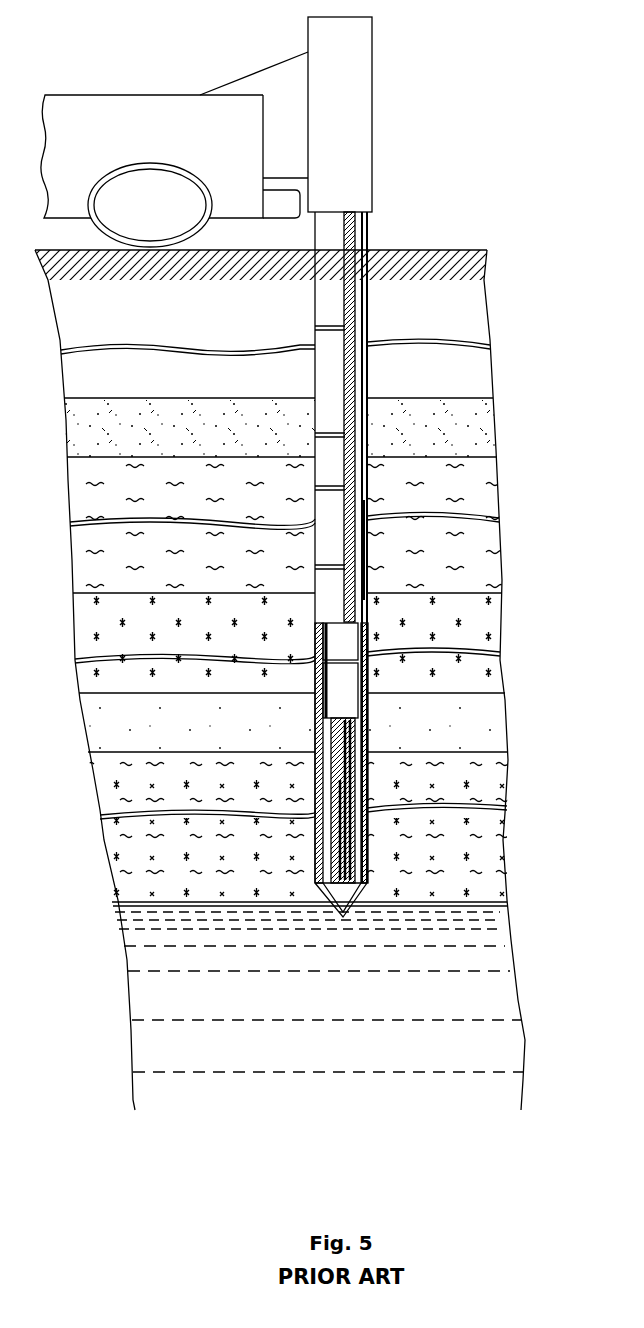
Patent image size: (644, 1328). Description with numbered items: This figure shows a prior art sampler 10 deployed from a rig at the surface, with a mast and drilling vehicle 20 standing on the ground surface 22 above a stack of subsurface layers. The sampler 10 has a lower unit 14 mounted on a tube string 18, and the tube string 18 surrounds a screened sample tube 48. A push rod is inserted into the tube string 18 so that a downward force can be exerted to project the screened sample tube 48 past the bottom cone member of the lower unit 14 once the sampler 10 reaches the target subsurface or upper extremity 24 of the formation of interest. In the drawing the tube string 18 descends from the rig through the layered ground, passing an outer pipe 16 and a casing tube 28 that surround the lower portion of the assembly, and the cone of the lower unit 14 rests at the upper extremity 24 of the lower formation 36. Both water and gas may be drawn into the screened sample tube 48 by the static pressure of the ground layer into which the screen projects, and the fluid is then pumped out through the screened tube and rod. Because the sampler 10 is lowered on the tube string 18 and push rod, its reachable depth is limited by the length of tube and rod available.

The sampler 10 is at (368, 380).
The lower unit 14 is at (374, 714).
The outer pipe 16 is at (372, 551).
The tube string 18 is at (325, 377).
The drilling vehicle 20 is at (147, 94).
The ground surface 22 is at (433, 250).
The upper extremity 24 is at (494, 921).
The casing tube 28 is at (318, 673).
The formation 36 is at (503, 998).
The screened sample tube 48 is at (362, 833).